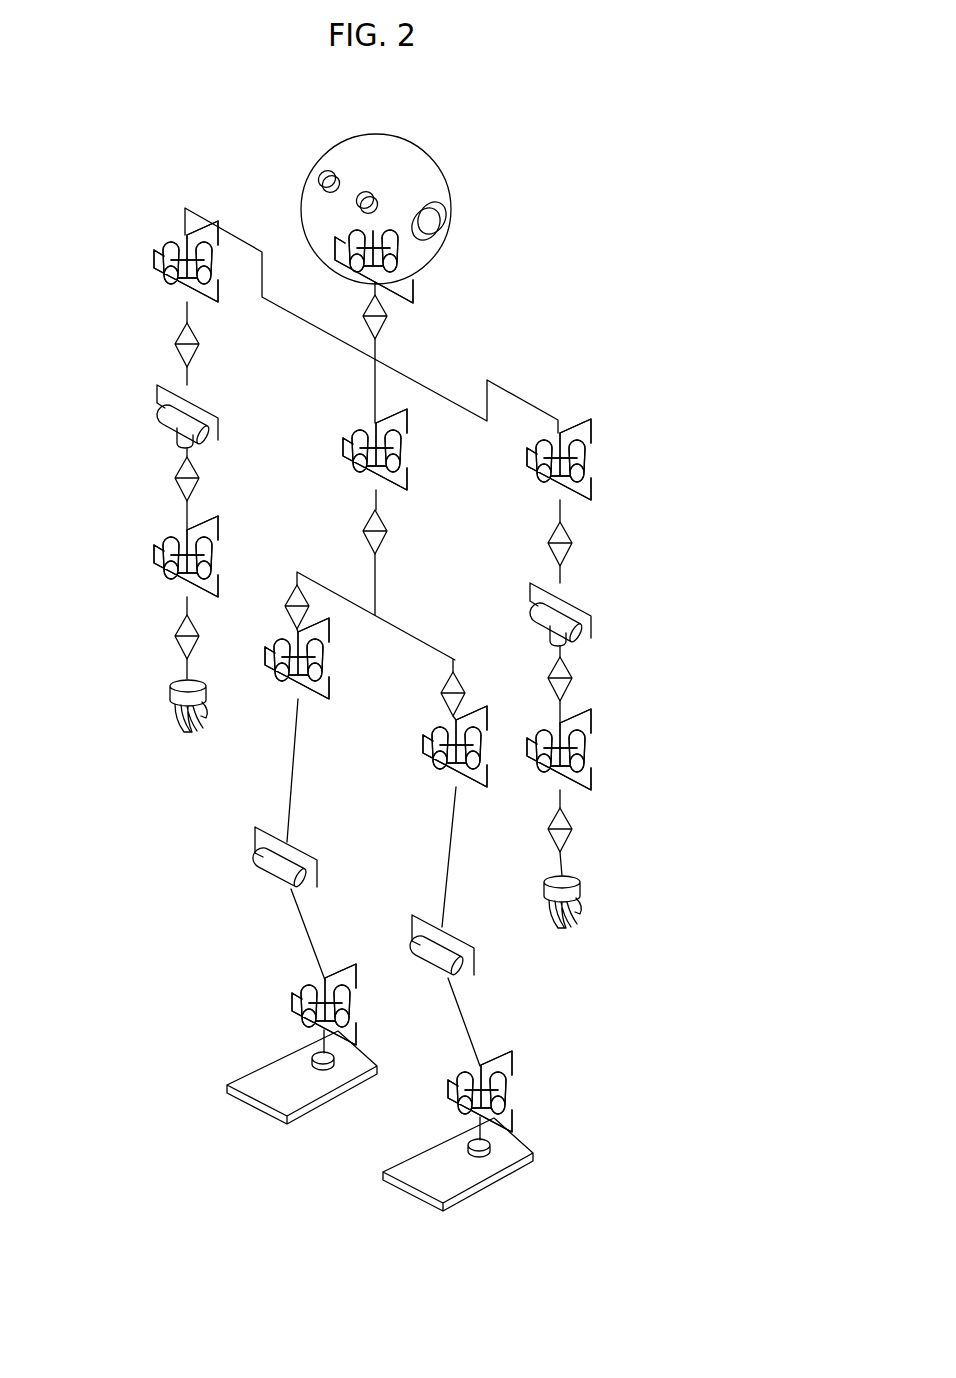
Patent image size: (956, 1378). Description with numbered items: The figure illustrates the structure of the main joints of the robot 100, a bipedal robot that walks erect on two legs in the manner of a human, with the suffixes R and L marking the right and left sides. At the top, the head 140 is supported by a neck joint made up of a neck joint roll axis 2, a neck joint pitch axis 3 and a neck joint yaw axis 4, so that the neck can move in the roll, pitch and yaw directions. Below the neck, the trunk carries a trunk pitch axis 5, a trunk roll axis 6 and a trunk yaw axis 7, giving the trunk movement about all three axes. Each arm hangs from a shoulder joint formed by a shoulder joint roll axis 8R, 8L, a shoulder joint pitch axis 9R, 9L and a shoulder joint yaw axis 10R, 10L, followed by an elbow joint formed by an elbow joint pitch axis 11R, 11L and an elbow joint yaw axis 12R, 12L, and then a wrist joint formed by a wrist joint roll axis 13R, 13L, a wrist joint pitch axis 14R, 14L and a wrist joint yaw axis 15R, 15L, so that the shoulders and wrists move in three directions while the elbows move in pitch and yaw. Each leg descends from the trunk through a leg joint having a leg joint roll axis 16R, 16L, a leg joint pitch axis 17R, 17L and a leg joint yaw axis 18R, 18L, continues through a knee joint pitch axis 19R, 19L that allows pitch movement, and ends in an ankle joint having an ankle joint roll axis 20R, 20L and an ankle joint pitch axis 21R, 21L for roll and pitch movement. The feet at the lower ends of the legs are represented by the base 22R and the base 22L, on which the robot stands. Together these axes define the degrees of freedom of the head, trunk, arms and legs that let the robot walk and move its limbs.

The robot 100 is at (206, 167).
The head 140 is at (431, 161).
The neck joint roll axis 2 is at (395, 250).
The neck joint pitch axis 3 is at (392, 268).
The neck joint yaw axis 4 is at (380, 327).
The trunk pitch axis 5 is at (401, 470).
The trunk roll axis 6 is at (398, 456).
The trunk yaw axis 7 is at (386, 546).
The shoulder joint roll axis 8R is at (170, 280).
The shoulder joint pitch axis 9R is at (163, 258).
The shoulder joint yaw axis 10R is at (176, 345).
The elbow joint pitch axis 11R is at (170, 420).
The elbow joint yaw axis 12R is at (177, 482).
The wrist joint roll axis 13R is at (172, 585).
The wrist joint pitch axis 14R is at (165, 560).
The wrist joint yaw axis 15R is at (177, 638).
The leg joint roll axis 16R is at (283, 682).
The leg joint pitch axis 17R is at (320, 674).
The leg joint yaw axis 18R is at (291, 598).
The knee joint pitch axis 19R is at (303, 882).
The ankle joint roll axis 20R is at (306, 1021).
The ankle joint pitch axis 21R is at (346, 1019).
The base 22R is at (288, 1106).
The shoulder joint roll axis 8L is at (590, 453).
The shoulder joint pitch axis 9L is at (586, 474).
The shoulder joint yaw axis 10L is at (575, 546).
The elbow joint pitch axis 11L is at (578, 638).
The elbow joint yaw axis 12L is at (573, 685).
The wrist joint roll axis 13L is at (590, 753).
The wrist joint pitch axis 14L is at (586, 770).
The wrist joint yaw axis 15L is at (577, 831).
The leg joint roll axis 16L is at (441, 772).
The leg joint pitch axis 17L is at (434, 748).
The leg joint yaw axis 18L is at (462, 690).
The knee joint pitch axis 19L is at (468, 960).
The ankle joint roll axis 20L is at (507, 1091).
The ankle joint pitch axis 21L is at (506, 1107).
The base 22L is at (460, 1178).